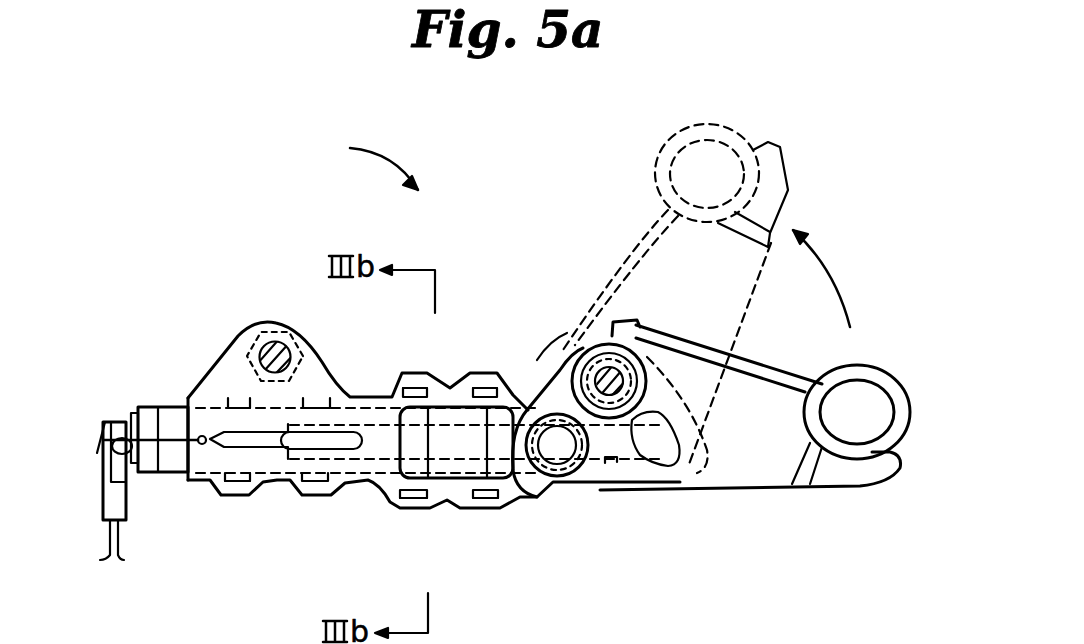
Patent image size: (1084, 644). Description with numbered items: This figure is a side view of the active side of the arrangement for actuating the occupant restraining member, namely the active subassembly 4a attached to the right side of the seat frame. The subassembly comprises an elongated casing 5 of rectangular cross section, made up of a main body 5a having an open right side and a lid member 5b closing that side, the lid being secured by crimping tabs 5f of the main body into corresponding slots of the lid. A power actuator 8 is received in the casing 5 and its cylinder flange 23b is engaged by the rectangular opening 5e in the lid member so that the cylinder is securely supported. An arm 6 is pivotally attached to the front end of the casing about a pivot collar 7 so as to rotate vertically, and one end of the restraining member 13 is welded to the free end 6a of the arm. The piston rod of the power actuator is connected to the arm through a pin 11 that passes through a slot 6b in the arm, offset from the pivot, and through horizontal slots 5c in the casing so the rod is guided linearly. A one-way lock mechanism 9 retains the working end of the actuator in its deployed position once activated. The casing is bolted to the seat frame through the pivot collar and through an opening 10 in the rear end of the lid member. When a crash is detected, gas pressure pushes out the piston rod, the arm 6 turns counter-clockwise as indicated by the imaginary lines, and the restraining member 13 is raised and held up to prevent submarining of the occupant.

The active subassembly 4a is at (571, 221).
The casing 5 is at (263, 259).
The main body 5a is at (227, 337).
The lid member 5b is at (216, 368).
The horizontal slots 5c is at (610, 478).
The rectangular opening 5e is at (406, 394).
The tabs 5f is at (483, 390).
The arm 6 is at (770, 470).
The free end 6a is at (792, 143).
The slot 6b is at (567, 470).
The pivot collar 7 is at (600, 376).
The power actuator 8 is at (172, 413).
The one-way lock mechanism 9 is at (457, 503).
The opening 10 is at (280, 347).
The pin 11 is at (115, 422).
The restraining member 13 is at (745, 122).
The flange 23b is at (380, 470).